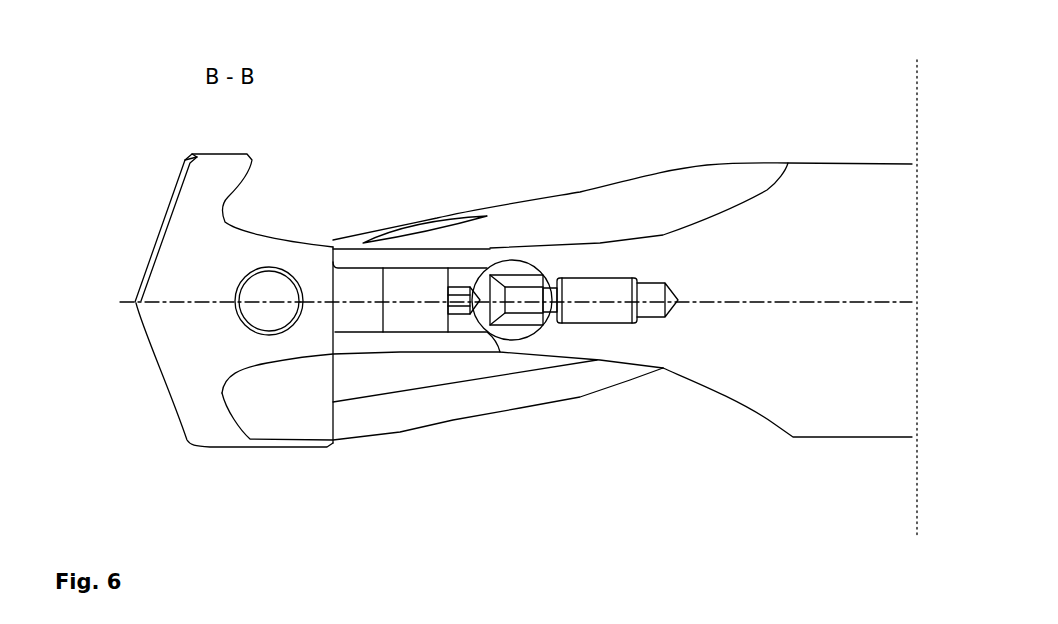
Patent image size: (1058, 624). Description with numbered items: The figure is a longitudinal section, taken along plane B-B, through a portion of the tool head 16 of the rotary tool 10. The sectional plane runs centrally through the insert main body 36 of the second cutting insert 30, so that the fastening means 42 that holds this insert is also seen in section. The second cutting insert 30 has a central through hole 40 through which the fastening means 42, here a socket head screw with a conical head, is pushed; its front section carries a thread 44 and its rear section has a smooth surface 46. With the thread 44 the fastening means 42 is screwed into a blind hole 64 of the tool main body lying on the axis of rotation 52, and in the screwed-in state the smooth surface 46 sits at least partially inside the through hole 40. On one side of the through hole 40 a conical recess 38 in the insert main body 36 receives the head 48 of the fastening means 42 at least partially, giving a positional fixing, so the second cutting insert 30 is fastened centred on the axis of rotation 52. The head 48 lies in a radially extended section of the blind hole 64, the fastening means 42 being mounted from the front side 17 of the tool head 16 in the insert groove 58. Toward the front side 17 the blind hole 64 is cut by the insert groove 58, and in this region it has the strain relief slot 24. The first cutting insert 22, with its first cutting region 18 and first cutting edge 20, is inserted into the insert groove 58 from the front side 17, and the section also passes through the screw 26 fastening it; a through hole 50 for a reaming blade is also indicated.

The rotary tool 10 is at (410, 76).
The tool head 16 is at (845, 413).
The front side 17 is at (104, 302).
The first cutting region 18 is at (140, 327).
The first cutting edge 20 is at (126, 274).
The first cutting insert 22 is at (182, 250).
The strain relief slot 24 is at (402, 317).
The screw for cutting insert 26 is at (267, 312).
The second cutting insert 30 is at (520, 268).
The insert main body 36 is at (512, 300).
The conical recess 38 is at (487, 310).
The through hole for fastening means 40 is at (510, 278).
The fastening means 42 is at (590, 295).
The thread 44 is at (598, 322).
The smooth surface 46 is at (532, 323).
The head of fastening means 48 is at (457, 321).
The through hole for reaming blade 50 is at (493, 259).
The axis of rotation 52 is at (843, 303).
The insert groove 58 is at (352, 317).
The blind hole 64 is at (408, 286).